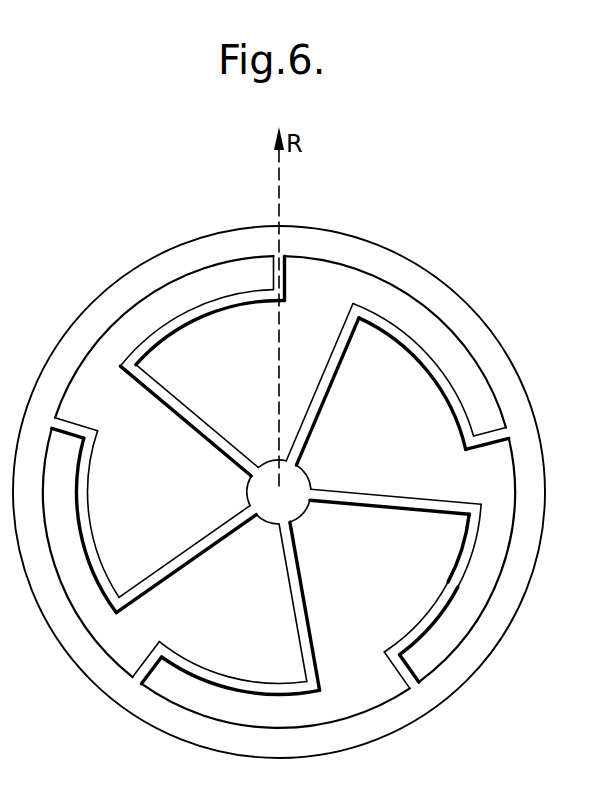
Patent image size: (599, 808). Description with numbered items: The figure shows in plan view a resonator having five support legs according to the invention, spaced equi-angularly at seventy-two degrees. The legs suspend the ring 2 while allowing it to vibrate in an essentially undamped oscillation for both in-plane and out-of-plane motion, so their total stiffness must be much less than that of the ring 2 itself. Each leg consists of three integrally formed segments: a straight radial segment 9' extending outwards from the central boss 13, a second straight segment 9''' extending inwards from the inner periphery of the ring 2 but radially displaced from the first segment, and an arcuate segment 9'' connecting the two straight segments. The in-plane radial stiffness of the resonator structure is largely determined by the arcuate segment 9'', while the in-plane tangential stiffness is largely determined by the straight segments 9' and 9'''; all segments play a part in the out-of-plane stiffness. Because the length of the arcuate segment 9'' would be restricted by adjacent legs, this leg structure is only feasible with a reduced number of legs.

The ring 2 is at (457, 318).
The straight radial segment 9' is at (395, 485).
The arcuate segment 9'' is at (432, 579).
The second straight segment 9''' is at (397, 643).
The central boss 13 is at (270, 511).